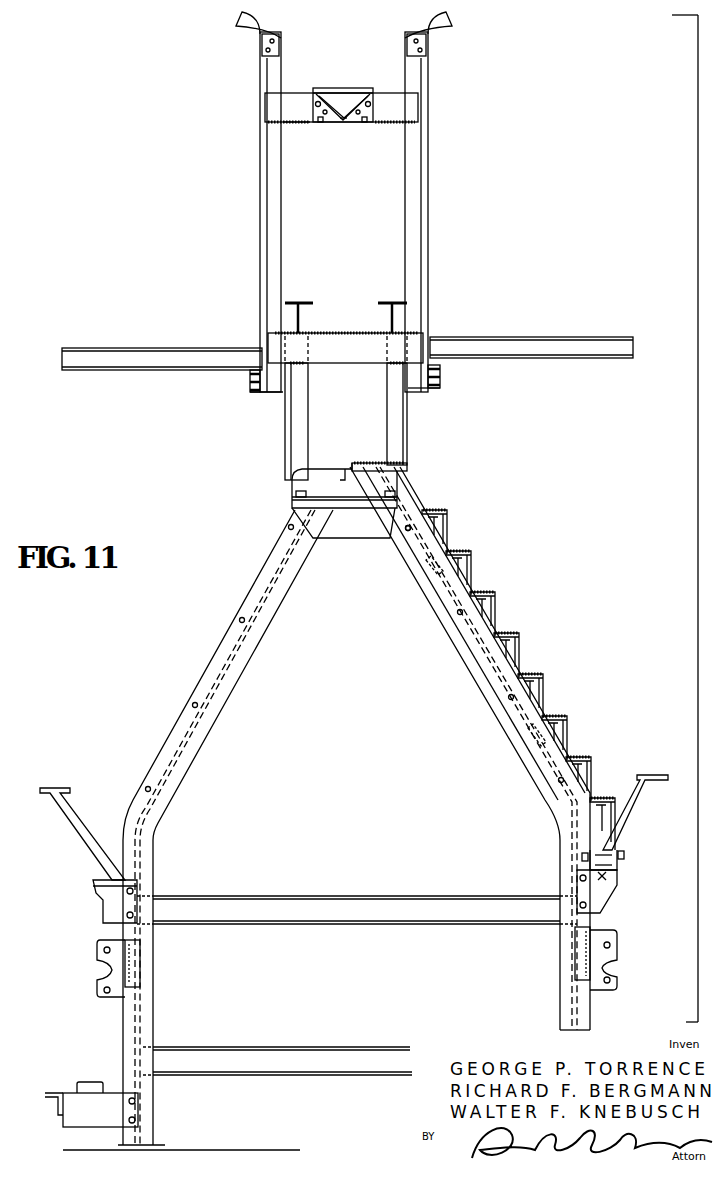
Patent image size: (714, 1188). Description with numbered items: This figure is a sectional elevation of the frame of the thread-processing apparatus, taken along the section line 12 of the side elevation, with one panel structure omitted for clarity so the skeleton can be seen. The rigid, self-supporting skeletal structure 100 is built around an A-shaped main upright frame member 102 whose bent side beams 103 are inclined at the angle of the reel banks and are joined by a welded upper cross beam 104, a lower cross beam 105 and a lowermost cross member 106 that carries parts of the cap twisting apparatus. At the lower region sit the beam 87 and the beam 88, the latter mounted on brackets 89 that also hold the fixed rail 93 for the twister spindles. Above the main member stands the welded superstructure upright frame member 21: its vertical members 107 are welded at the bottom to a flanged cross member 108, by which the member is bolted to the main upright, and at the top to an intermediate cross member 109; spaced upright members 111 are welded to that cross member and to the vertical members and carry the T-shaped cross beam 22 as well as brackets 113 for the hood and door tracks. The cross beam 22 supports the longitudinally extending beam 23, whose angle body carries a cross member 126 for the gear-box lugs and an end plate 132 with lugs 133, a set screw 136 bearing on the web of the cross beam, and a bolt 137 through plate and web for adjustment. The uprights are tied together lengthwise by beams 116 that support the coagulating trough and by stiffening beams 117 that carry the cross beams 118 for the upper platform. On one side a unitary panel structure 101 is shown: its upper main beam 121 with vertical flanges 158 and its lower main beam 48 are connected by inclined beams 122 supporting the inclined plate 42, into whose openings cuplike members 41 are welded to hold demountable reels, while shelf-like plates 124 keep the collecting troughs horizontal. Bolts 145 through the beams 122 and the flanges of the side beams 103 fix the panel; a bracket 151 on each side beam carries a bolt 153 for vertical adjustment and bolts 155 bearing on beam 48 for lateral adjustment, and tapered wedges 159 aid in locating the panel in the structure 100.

The section line 12 is at (671, 522).
The upright frame member 21 is at (351, 202).
The cross beam 22 is at (309, 124).
The longitudinally extending beam 23 is at (348, 109).
The cuplike member 41 is at (437, 524).
The inclined plate 42 is at (488, 640).
The lower main beam 48 is at (626, 822).
The beam 87 is at (125, 945).
The beam 88 is at (95, 1082).
The bracket 89 is at (90, 1120).
The fixed rail 93 is at (58, 1093).
The supporting structure 100 is at (290, 524).
The panel structure 101 is at (535, 663).
The main upright frame member 102 is at (312, 830).
The side beam 103 is at (228, 646).
The upper cross beam 104 is at (330, 538).
The lower cross beam 105 is at (375, 896).
The lowermost cross member 106 is at (350, 1047).
The vertical member 107 is at (285, 445).
The flanged cross member 108 is at (342, 472).
The intermediate cross member 109 is at (346, 355).
The upright member 111 is at (262, 189).
The bracket 113 is at (252, 31).
The beam 116 is at (313, 302).
The stiffening beam 117 is at (250, 386).
The cross beam 118 is at (136, 348).
The upper main beam 121 is at (375, 463).
The inclined beam 122 is at (499, 748).
The shelf-like plate 124 is at (438, 510).
The cross member 126 is at (322, 92).
The plate 132 is at (336, 120).
The lug 133 is at (364, 122).
The set screw 136 is at (373, 104).
The bolt 137 is at (313, 104).
The bolt 145 is at (457, 612).
The bracket 151 is at (110, 890).
The bolt 153 is at (612, 883).
The bolt 155 is at (582, 859).
The vertical flange 158 is at (344, 469).
The tapered wedge 159 is at (428, 572).